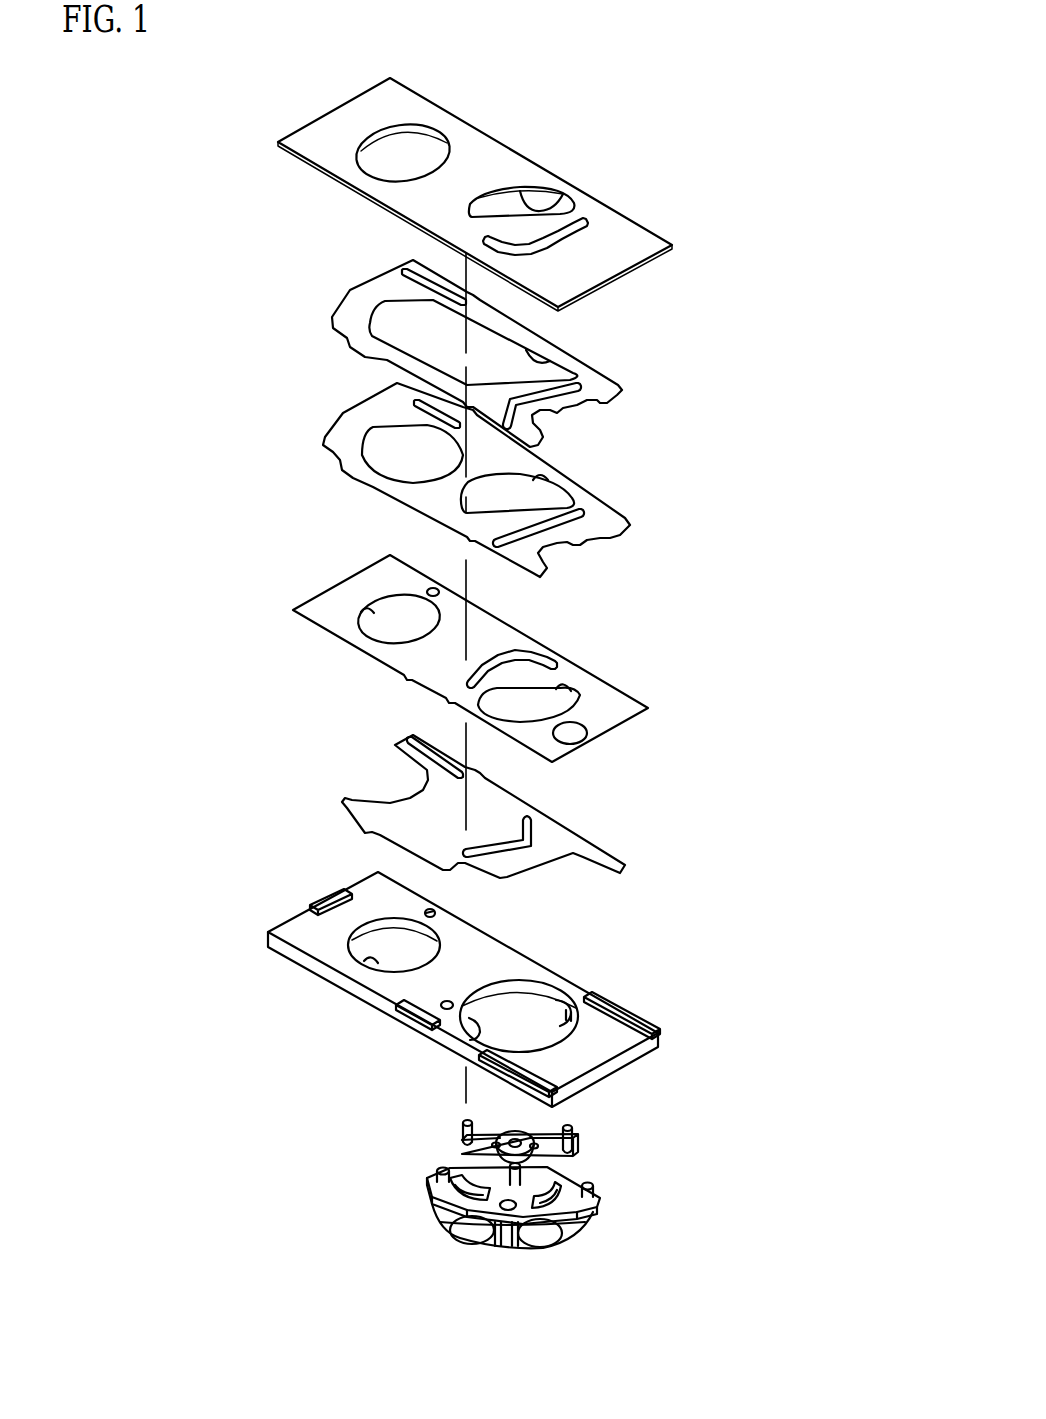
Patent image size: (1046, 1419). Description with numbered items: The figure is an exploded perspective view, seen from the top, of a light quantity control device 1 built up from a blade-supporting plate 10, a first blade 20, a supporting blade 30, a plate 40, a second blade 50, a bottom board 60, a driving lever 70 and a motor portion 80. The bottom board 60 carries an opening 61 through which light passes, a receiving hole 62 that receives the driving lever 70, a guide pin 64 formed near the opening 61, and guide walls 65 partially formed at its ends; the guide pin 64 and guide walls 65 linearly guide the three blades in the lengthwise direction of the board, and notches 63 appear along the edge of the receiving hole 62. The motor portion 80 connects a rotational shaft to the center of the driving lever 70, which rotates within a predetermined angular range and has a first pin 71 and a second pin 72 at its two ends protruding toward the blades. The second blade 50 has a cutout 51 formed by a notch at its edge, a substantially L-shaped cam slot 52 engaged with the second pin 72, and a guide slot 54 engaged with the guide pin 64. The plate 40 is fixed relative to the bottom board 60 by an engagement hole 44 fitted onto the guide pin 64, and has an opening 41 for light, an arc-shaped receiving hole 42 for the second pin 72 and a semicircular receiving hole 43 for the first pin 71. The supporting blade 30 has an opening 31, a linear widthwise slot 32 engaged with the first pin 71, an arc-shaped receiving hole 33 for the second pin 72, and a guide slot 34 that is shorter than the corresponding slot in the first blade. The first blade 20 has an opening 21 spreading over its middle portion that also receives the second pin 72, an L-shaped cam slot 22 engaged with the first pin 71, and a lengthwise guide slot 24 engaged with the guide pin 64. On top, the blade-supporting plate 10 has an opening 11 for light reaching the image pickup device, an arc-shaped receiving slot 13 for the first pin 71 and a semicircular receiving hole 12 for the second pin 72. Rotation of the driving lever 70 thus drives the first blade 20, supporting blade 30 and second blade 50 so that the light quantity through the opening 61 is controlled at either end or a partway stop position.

The light quantity control device 1 is at (188, 191).
The blade-supporting plate 10 is at (589, 191).
The opening 11 is at (432, 131).
The receiving hole 12 is at (563, 194).
The receiving slot 13 is at (592, 229).
The first blade 20 is at (616, 328).
The opening 21 is at (565, 355).
The slot 22 is at (585, 387).
The guide slot 24 is at (413, 262).
The supporting blade 30 is at (579, 463).
The opening 31 is at (360, 457).
The slot 32 is at (592, 520).
The receiving hole 33 is at (573, 482).
The guide slot 34 is at (415, 400).
The plate 40 is at (579, 634).
The opening 41 is at (365, 616).
The receiving hole 42 is at (546, 660).
The receiving hole 43 is at (573, 690).
The engagement hole 44 is at (433, 585).
The second blade 50 is at (574, 795).
The cutout 51 is at (400, 801).
The slot 52 is at (546, 818).
The guide slot 54 is at (407, 742).
The bottom board 60 is at (562, 1006).
The opening 61 is at (370, 961).
The receiving hole 62 is at (578, 1038).
The notch 63 is at (567, 1000).
The guide pin 64 is at (437, 912).
The guide walls 65 is at (618, 1003).
The driving lever 70 is at (534, 1152).
The first pin 71 is at (580, 1130).
The second pin 72 is at (461, 1140).
The motor portion 80 is at (623, 1232).